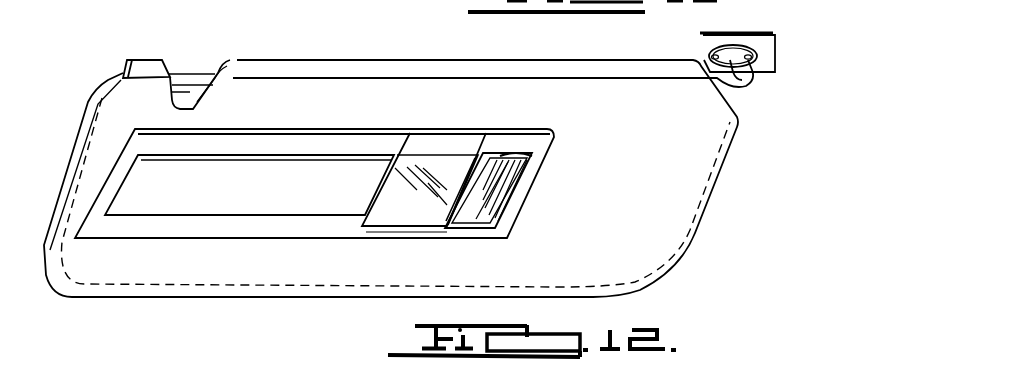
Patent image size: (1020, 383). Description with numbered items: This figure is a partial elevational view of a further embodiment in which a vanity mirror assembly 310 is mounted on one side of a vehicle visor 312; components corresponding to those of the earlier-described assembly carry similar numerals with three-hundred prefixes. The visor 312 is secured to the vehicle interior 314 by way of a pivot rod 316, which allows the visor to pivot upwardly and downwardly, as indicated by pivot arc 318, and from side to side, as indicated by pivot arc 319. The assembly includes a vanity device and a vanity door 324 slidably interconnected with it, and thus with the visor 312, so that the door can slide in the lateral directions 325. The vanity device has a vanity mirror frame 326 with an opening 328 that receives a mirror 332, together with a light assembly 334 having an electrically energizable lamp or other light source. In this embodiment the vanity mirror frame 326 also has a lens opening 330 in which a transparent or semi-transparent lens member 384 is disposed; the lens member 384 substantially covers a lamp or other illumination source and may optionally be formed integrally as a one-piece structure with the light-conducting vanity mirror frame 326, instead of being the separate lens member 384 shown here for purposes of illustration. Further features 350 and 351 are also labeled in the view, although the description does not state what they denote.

The vanity mirror assembly 310 is at (402, 241).
The vehicle visor 312 is at (668, 229).
The vehicle interior 314 is at (758, 28).
The pivot rod 316 is at (737, 92).
The pivot arc 318 is at (249, 106).
The pivot arc 319 is at (699, 138).
The vanity door 324 is at (273, 234).
The lateral directions 325 is at (427, 110).
The vanity mirror frame 326 is at (509, 214).
The opening 328 is at (423, 224).
The lens opening 330 is at (522, 160).
The mirror 332 is at (443, 163).
The light assembly 334 is at (497, 194).
The mirror 350 is at (167, 197).
The slide track 351 is at (440, 147).
The lens member 384 is at (477, 223).